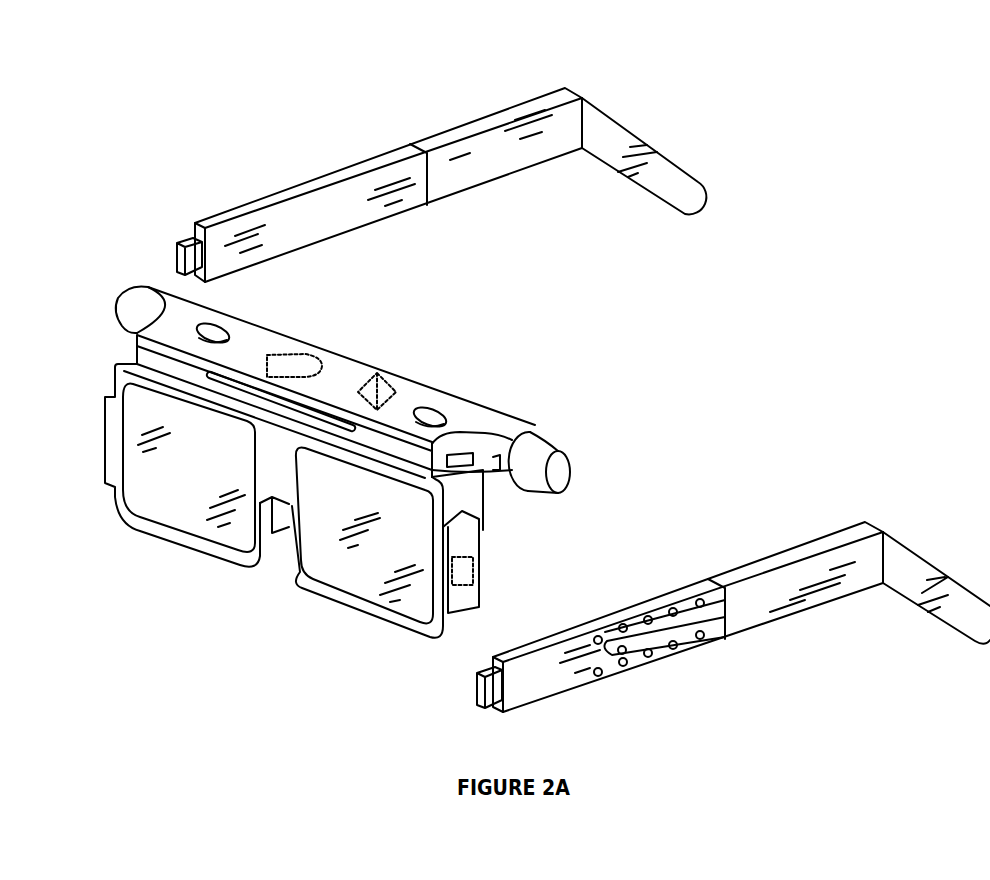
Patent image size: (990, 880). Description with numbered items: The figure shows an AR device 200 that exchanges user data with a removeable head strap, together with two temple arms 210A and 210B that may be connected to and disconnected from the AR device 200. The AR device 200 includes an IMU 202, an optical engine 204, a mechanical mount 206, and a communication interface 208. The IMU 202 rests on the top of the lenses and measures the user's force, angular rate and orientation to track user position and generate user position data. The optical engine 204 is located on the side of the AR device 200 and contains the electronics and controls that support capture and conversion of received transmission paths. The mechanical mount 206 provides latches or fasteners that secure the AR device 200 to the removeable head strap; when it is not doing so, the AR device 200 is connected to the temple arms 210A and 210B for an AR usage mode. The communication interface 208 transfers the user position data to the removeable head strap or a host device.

The AR device 200 is at (550, 335).
The IMU 202 is at (404, 390).
The optical engine 204 is at (484, 571).
The mechanical mount 206 is at (234, 331).
The communication interface 208 is at (311, 358).
The temple arm 210A is at (535, 98).
The temple arm 210B is at (821, 530).